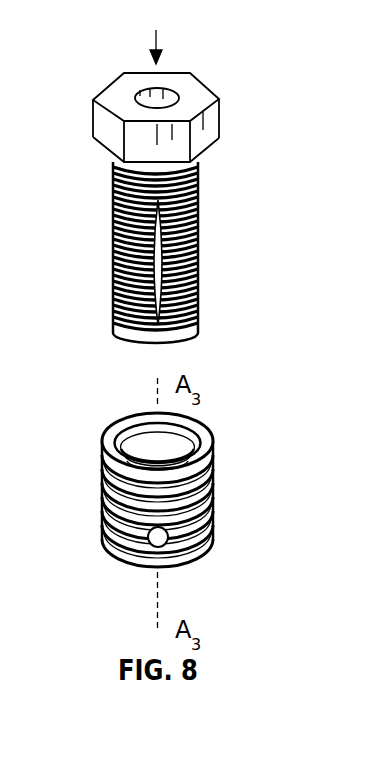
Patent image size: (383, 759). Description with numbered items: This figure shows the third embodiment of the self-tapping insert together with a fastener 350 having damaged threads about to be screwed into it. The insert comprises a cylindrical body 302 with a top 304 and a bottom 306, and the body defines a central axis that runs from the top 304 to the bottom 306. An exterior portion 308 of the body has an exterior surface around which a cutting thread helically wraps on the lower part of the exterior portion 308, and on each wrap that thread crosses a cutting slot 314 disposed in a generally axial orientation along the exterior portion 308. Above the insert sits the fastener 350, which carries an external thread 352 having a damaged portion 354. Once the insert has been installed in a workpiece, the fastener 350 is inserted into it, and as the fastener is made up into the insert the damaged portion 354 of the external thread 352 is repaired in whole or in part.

The cylindrical body 302 is at (161, 512).
The top 304 is at (113, 433).
The bottom 306 is at (117, 558).
The exterior portion 308 is at (102, 498).
The cutting slot 314 is at (165, 542).
The fastener 350 is at (196, 208).
The external thread 352 is at (202, 307).
The damaged portion 354 is at (162, 222).